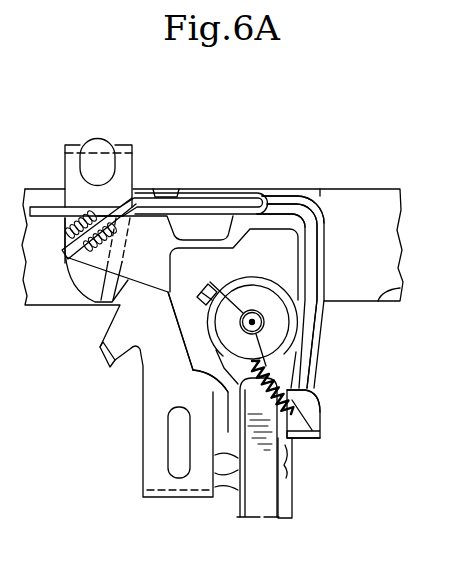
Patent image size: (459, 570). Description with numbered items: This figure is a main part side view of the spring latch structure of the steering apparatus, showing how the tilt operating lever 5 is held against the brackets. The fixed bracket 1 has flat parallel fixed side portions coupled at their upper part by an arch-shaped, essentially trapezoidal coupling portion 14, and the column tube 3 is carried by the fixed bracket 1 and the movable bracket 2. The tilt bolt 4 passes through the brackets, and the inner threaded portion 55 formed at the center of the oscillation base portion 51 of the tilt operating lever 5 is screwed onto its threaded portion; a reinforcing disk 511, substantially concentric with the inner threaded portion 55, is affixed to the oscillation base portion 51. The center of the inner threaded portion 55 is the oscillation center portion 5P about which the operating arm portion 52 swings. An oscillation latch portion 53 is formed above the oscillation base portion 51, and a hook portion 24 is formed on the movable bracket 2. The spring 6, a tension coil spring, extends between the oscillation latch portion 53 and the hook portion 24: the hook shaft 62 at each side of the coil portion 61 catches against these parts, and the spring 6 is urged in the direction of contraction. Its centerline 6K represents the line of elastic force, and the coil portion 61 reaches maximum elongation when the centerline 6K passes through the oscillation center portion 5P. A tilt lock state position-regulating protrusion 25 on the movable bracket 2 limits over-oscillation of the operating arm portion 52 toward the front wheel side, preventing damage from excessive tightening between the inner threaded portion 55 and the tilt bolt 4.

The fixed bracket 1 is at (285, 218).
The movable bracket 2 is at (156, 384).
The column tube 3 is at (372, 190).
The tilt bolt 4 is at (264, 323).
The tilt operating lever 5 is at (236, 512).
The oscillation center portion 5P is at (256, 316).
The spring 6 is at (306, 398).
The centerline 6K is at (200, 349).
The coupling portion 14 is at (106, 141).
The hook portion 24 is at (305, 441).
The tilt lock state position-regulating protrusion 25 is at (97, 363).
The oscillation base portion 51 is at (320, 284).
The reinforcing disk 511 is at (314, 257).
The operating arm portion 52 is at (271, 493).
The oscillation latch portion 53 is at (212, 283).
The inner threaded portion 55 is at (320, 296).
The coil portion 61 is at (305, 368).
The hook shaft 62 is at (192, 368).